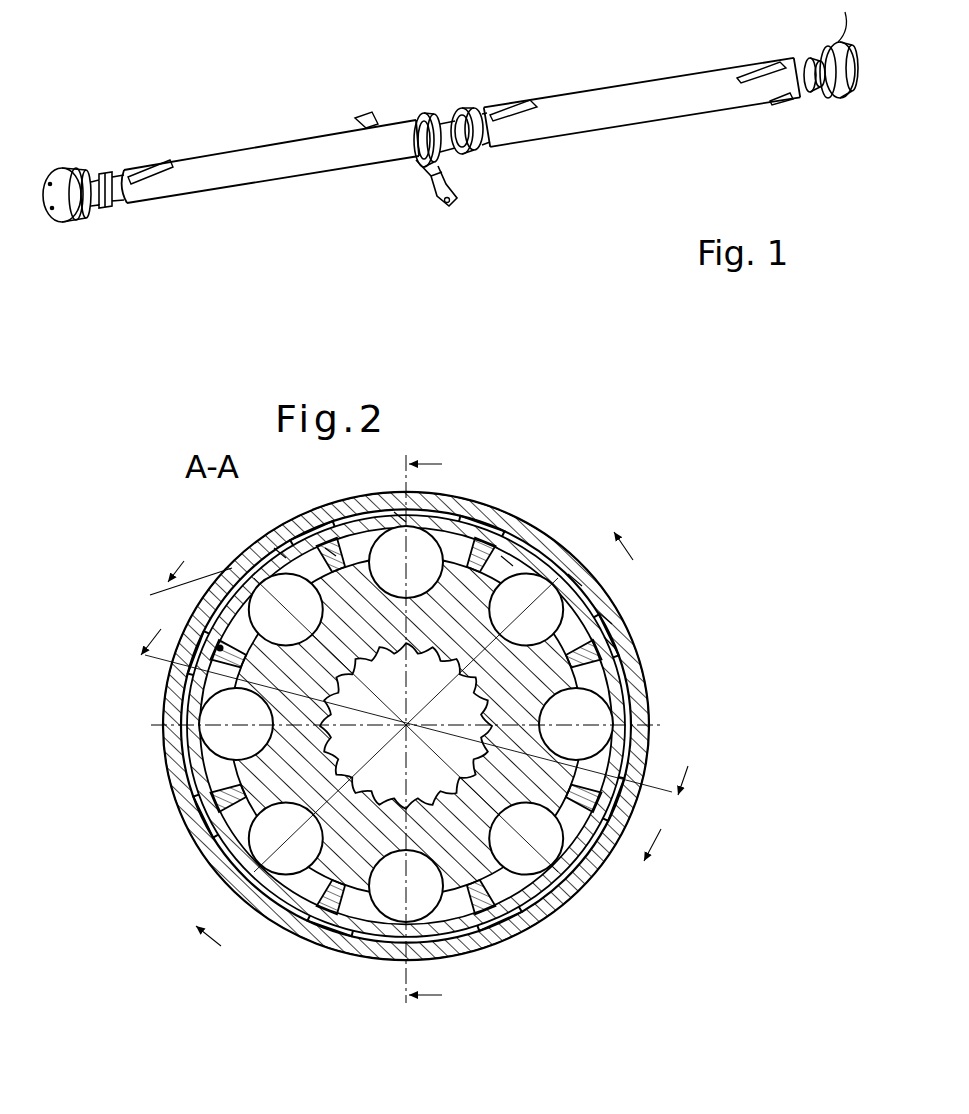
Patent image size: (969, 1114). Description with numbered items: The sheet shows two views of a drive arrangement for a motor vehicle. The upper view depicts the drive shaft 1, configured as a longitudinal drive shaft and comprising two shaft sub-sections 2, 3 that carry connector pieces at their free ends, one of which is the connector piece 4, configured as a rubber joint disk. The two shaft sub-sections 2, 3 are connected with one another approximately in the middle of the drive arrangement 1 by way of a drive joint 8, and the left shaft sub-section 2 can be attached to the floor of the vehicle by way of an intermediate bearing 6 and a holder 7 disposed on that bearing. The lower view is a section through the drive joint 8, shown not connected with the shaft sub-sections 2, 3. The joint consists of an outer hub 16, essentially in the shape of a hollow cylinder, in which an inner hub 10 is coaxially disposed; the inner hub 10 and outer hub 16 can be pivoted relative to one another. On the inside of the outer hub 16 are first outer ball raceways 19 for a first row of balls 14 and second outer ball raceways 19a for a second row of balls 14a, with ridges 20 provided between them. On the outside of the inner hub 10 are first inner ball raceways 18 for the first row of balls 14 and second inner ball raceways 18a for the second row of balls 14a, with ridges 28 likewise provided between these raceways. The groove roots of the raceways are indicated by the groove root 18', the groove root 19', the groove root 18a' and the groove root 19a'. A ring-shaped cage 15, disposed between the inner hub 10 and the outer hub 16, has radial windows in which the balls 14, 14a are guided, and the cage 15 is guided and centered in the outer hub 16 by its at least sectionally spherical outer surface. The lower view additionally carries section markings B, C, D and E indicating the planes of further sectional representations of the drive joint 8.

In FIG. 1, the drive shaft 1 is at (540, 212).
In FIG. 1, the first shaft sub-section 2 is at (281, 176).
In FIG. 1, the second shaft sub-section 3 is at (667, 118).
In FIG. 1, the connector piece 4 is at (70, 222).
In FIG. 1, the intermediate bearing 6 is at (427, 113).
In FIG. 1, the holder 7 is at (430, 183).
In FIG. 1, the drive joint 8 is at (466, 104).
In FIG. 2, the drive joint 8 is at (614, 958).
In FIG. 2, the inner hub 10 is at (510, 683).
In FIG. 2, the first row of balls 14 is at (427, 552).
In FIG. 2, the second row of balls 14a is at (527, 592).
In FIG. 2, the cage 15 is at (622, 705).
In FIG. 2, the outer hub 16 is at (648, 713).
In FIG. 2, the first inner ball raceways 18 is at (309, 513).
In FIG. 2, the groove root of first inner ball raceway 18' is at (250, 526).
In FIG. 2, the second inner ball raceways 18a is at (676, 631).
In FIG. 2, the groove root of second inner ball raceway 18a' is at (549, 526).
In FIG. 2, the first outer ball raceways 19 is at (406, 673).
In FIG. 2, the groove root of first outer ball raceway 19' is at (375, 489).
In FIG. 2, the second outer ball raceways 19a is at (664, 601).
In FIG. 2, the groove root of second outer ball raceway 19a' is at (643, 565).
In FIG. 2, the ridges 20 is at (220, 648).
In FIG. 2, the ridges 28 is at (622, 790).
In FIG. 2, the section line B- B is at (412, 684).
In FIG. 2, the section line C- C is at (418, 747).
In FIG. 2, the section line D- D is at (419, 701).
In FIG. 2, the section line E- E is at (434, 734).